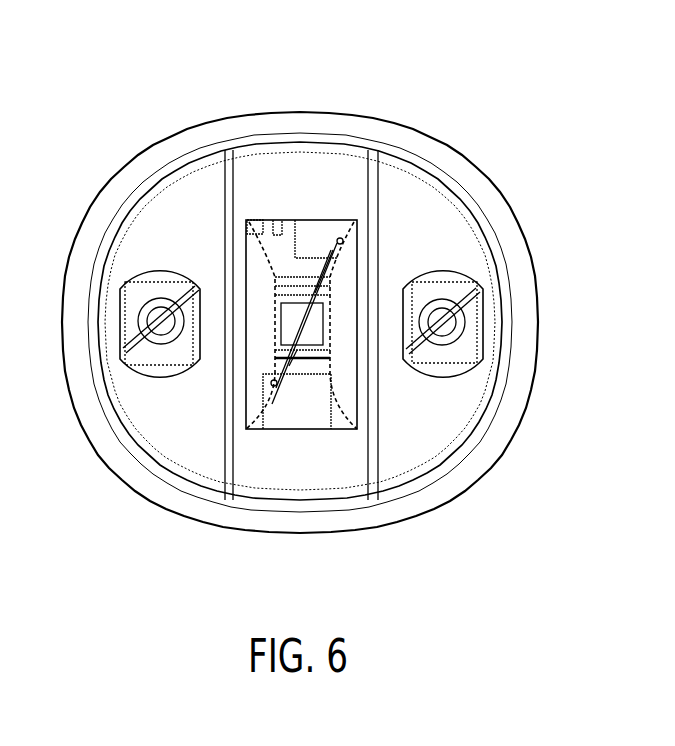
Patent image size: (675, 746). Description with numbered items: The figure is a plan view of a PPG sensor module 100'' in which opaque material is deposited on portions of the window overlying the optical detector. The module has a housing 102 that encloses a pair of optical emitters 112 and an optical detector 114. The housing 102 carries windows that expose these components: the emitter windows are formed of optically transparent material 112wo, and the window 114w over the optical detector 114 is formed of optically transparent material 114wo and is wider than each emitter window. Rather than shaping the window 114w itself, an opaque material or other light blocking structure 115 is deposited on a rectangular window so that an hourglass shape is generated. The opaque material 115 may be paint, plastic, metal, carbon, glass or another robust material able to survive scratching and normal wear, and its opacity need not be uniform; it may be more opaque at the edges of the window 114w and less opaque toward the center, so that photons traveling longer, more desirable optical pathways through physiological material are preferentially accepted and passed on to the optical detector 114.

The PPG sensor module 100'' is at (571, 46).
The housing 102 is at (463, 156).
The optical emitters 112 is at (157, 318).
The optically transparent material 112wo is at (129, 299).
The optical detector 114 is at (293, 307).
The window 114w is at (316, 236).
The optically transparent material 114wo is at (285, 409).
The opaque material 115 is at (262, 367).